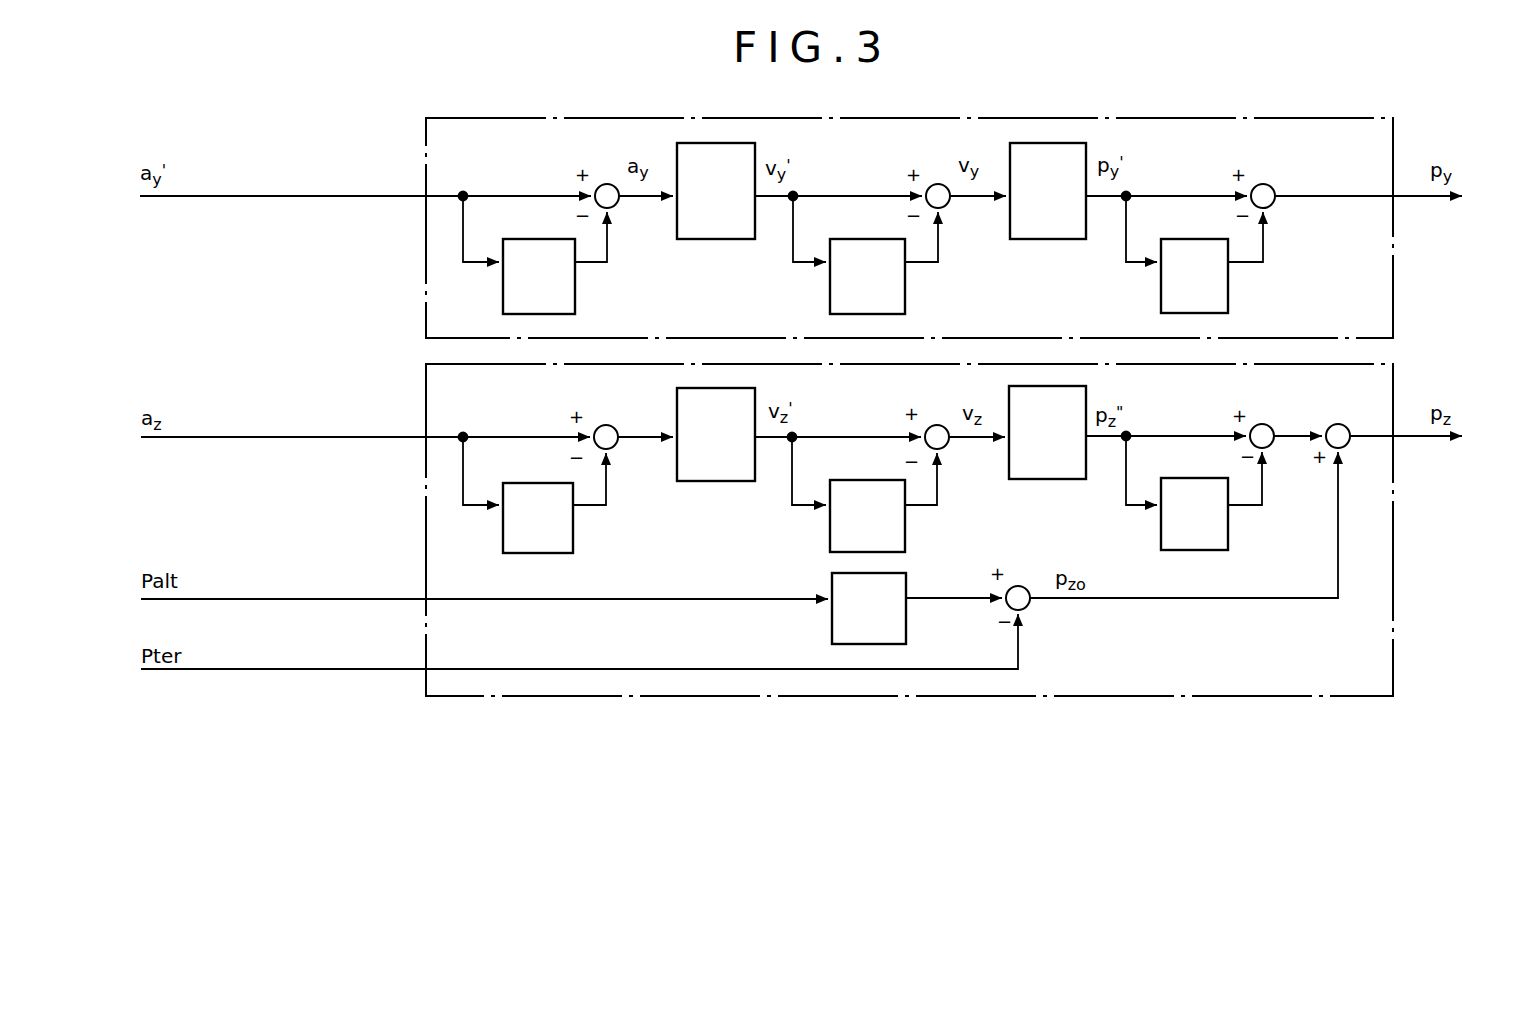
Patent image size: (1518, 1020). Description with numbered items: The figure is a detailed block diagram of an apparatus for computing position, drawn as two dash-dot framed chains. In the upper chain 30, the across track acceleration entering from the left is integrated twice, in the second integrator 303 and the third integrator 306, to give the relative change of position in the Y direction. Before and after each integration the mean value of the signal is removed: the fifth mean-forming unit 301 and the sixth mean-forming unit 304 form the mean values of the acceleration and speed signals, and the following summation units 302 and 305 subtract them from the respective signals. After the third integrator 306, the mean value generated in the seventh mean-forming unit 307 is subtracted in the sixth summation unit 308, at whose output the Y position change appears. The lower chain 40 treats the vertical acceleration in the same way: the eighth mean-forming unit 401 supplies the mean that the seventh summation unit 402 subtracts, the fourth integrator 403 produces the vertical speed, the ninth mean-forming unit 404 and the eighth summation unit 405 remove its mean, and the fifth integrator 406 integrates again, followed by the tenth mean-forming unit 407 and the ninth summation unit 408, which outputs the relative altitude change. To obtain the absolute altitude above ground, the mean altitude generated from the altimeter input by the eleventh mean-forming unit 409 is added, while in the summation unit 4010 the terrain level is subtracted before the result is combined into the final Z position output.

The position computing apparatus for the Y direction 30 is at (1303, 118).
The fifth mean-forming unit 301 is at (575, 290).
The summation unit 302 is at (613, 207).
The second integrator 303 is at (713, 239).
The sixth mean-forming unit 304 is at (905, 298).
The summation unit 305 is at (946, 205).
The third integrator 306 is at (1065, 239).
The seventh mean-forming unit 307 is at (1228, 296).
The sixth summation unit 308 is at (1270, 205).
The position computing apparatus for the Z direction 40 is at (1313, 696).
The eighth mean-forming unit 401 is at (573, 535).
The seventh summation unit 402 is at (613, 447).
The fourth integrator 403 is at (738, 481).
The ninth mean-forming unit 404 is at (905, 532).
The eighth summation unit 405 is at (946, 446).
The fifth integrator 406 is at (1045, 479).
The tenth mean-forming unit 407 is at (1228, 535).
The ninth summation unit 408 is at (1270, 445).
The eleventh mean-forming unit 409 is at (906, 628).
The summation unit 4010 is at (1028, 605).